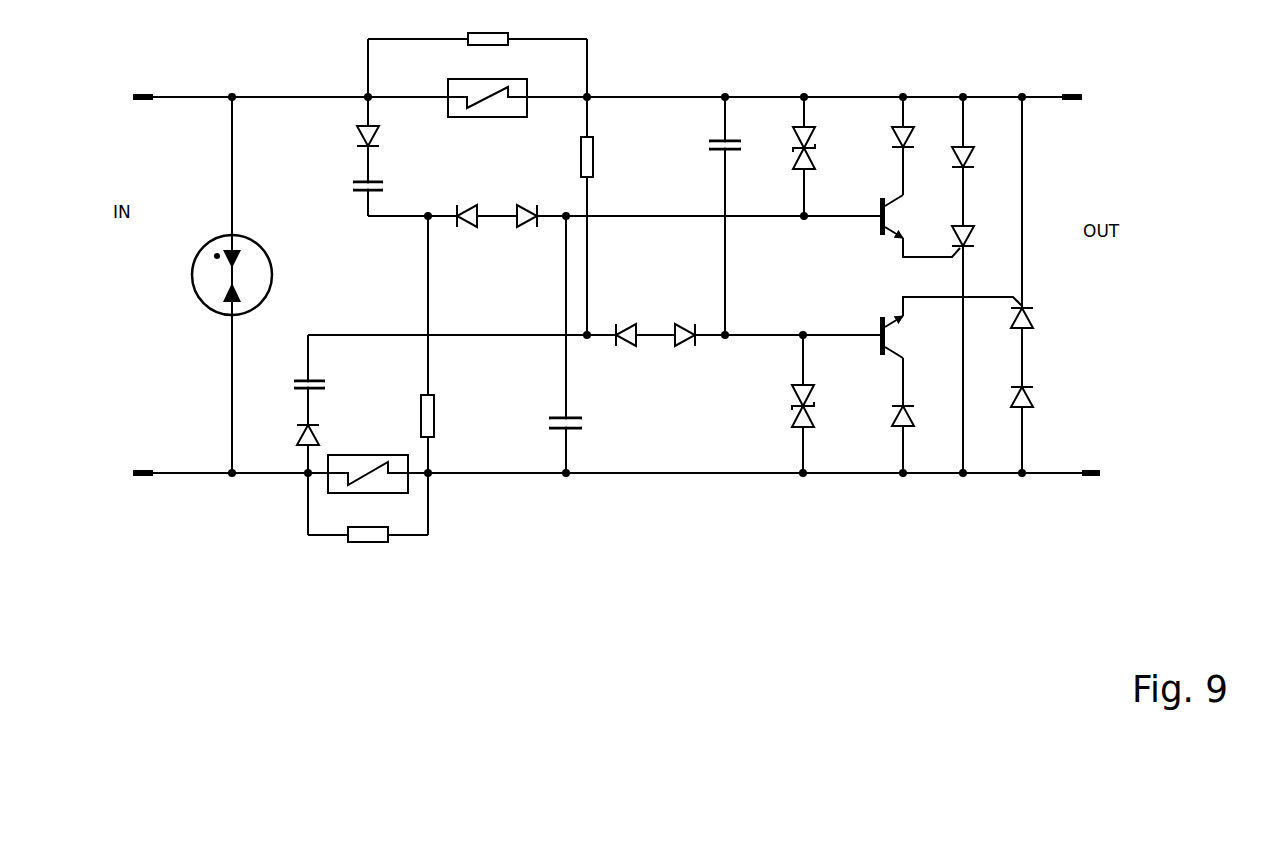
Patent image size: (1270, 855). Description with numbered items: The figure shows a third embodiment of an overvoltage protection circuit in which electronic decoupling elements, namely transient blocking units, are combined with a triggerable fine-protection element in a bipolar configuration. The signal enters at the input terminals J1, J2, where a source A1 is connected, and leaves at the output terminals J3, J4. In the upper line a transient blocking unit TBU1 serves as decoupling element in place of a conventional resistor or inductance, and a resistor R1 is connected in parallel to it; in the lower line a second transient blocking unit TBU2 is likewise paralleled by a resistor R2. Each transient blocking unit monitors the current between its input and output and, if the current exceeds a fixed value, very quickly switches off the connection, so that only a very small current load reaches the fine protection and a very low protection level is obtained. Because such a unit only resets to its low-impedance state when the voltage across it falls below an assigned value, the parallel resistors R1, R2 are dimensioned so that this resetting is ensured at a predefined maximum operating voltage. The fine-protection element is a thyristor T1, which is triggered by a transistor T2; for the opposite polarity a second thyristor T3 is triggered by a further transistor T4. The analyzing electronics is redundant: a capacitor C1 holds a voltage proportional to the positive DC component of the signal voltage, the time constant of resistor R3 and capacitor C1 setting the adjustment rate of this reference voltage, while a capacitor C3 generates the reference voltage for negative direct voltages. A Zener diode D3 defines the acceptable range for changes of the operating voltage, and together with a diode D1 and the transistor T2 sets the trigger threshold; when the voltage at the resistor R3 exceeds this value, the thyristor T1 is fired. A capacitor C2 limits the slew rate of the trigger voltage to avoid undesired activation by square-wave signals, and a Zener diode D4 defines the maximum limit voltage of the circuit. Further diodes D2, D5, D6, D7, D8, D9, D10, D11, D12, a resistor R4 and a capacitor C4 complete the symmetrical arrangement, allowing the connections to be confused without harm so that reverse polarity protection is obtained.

The input terminal J1 is at (142, 83).
The input terminal J2 is at (142, 459).
The output terminal J3 is at (1072, 86).
The output terminal J4 is at (1090, 463).
The current source / surge generator A1 is at (221, 270).
The resistor R1 is at (477, 55).
The resistor R2 is at (368, 507).
The resistor R3 is at (413, 409).
The resistor R4 is at (571, 152).
The transient blocking unit TBU1 is at (487, 83).
The transient blocking unit TBU2 is at (368, 460).
The capacitor C1 is at (352, 182).
The capacitor C2 is at (553, 413).
The capacitor C3 is at (293, 383).
The capacitor C4 is at (710, 140).
The diode D1 is at (523, 204).
The diode D2 is at (352, 134).
The Zener diode D3 is at (459, 204).
The Zener diode D4 is at (788, 148).
The diode D5 is at (681, 323).
The diode D6 is at (290, 432).
The diode D7 is at (617, 324).
The bidirectional transient voltage suppressor diode D8 is at (787, 406).
The diode D9 is at (886, 139).
The diode D10 is at (948, 147).
The diode D11 is at (884, 415).
The diode D12 is at (1005, 385).
The thyristor T1 is at (955, 224).
The transistor T2 is at (907, 217).
The thyristor T3 is at (1007, 318).
The transistor T4 is at (938, 327).